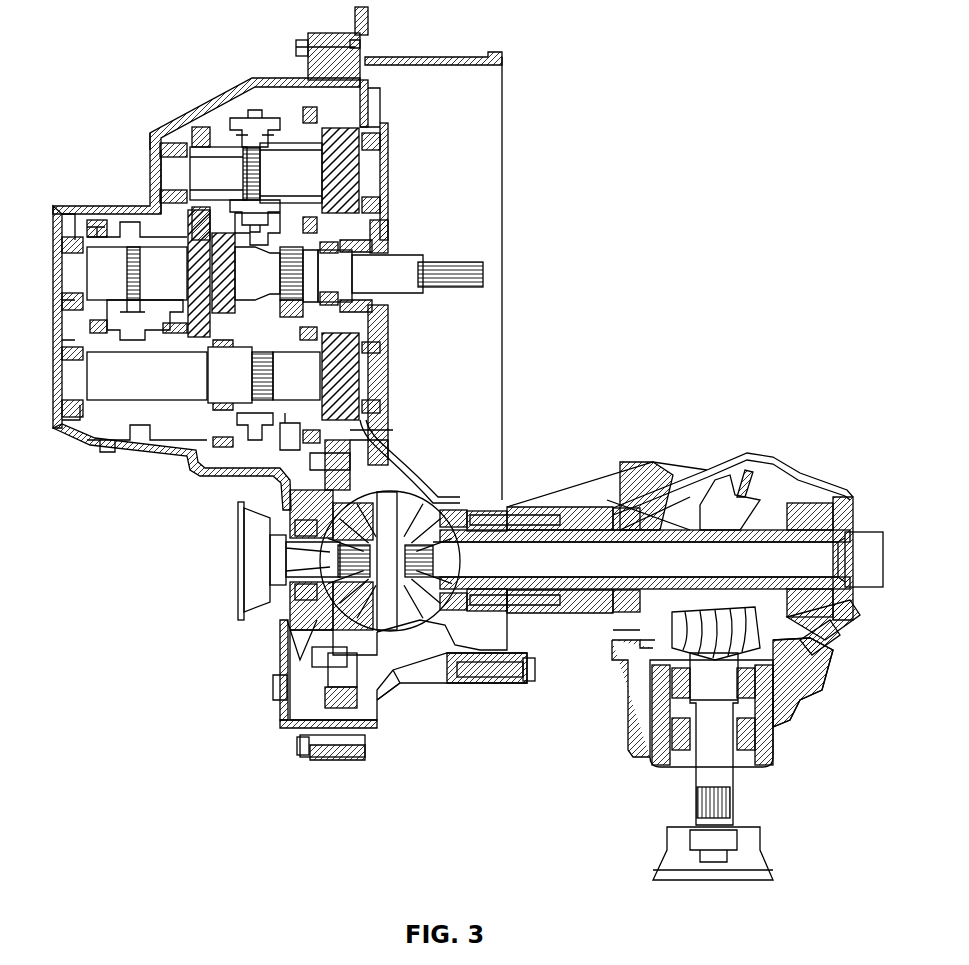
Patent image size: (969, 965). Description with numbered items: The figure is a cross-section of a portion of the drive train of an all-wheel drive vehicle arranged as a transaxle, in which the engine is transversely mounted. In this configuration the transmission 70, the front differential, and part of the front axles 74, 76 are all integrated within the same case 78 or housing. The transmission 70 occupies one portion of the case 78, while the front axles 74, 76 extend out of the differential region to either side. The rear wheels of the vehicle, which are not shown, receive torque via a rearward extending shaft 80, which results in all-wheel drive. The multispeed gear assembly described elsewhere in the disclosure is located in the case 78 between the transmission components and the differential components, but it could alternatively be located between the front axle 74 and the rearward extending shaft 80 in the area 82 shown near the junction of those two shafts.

The transmission 70 is at (445, 160).
The front axle 74 is at (668, 555).
The front axle 76 is at (262, 548).
The case 78 is at (66, 206).
The rearward extending shaft 80 is at (724, 774).
The area 82 is at (824, 684).